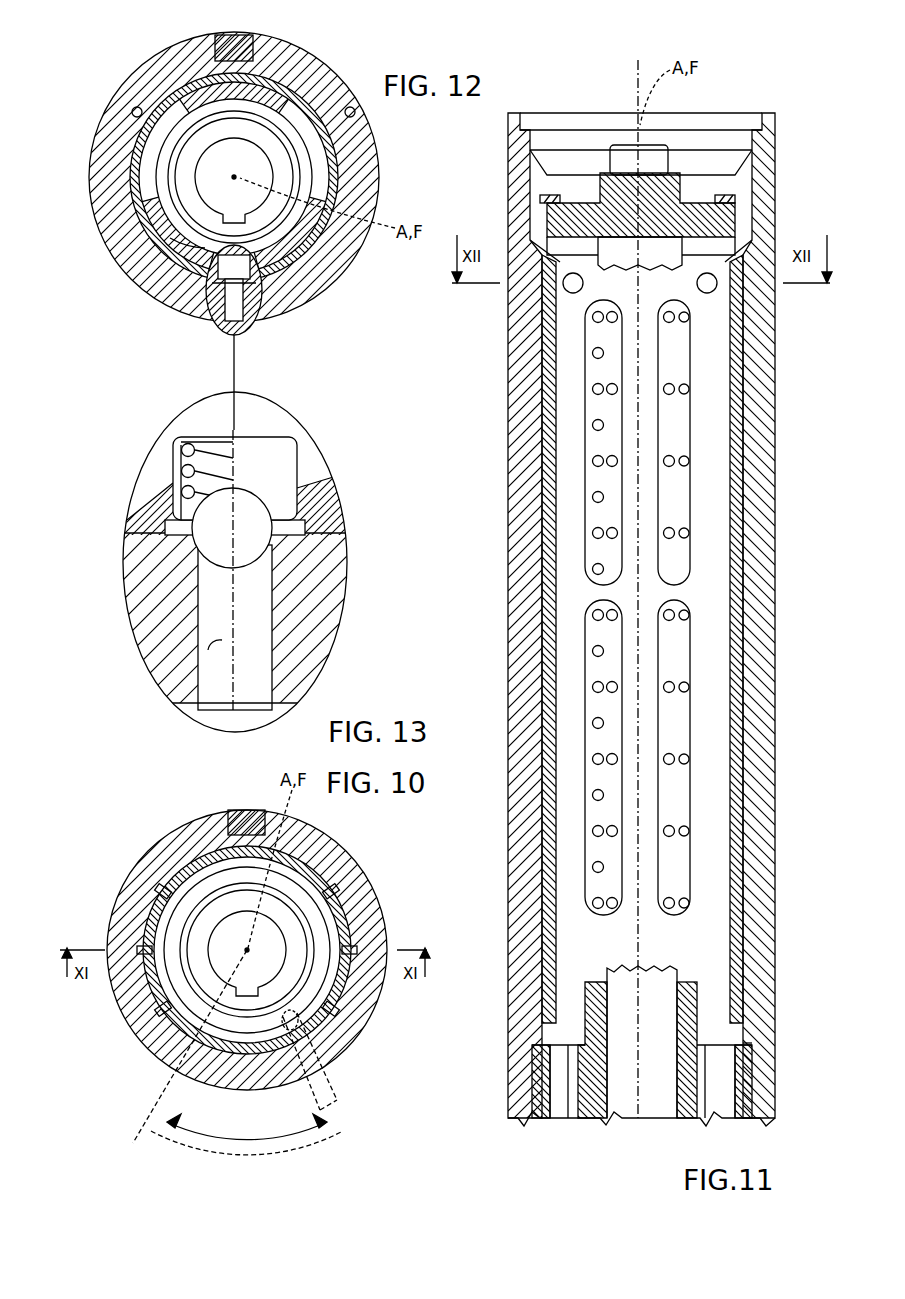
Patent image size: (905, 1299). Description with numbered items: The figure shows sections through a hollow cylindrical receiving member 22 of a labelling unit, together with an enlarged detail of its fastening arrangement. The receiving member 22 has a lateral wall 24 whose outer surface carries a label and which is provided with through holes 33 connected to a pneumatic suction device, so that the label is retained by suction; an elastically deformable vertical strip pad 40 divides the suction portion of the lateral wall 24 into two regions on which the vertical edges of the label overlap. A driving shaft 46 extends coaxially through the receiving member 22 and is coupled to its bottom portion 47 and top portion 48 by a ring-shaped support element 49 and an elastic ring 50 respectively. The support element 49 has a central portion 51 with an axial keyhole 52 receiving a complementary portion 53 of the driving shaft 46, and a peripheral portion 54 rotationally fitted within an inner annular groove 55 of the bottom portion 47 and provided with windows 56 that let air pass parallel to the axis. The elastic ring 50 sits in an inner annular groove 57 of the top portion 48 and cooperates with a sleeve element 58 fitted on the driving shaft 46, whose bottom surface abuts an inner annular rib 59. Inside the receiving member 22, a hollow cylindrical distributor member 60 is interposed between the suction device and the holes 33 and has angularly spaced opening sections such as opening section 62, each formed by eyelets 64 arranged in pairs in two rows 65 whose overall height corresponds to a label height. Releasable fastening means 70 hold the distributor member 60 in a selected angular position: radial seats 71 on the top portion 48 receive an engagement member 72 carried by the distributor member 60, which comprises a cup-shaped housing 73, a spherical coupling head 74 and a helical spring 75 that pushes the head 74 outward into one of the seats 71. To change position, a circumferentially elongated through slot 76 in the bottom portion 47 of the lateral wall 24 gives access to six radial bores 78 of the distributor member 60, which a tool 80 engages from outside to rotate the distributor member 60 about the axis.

In FIG. 12, the receiving member 22 is at (86, 163).
In FIG. 13, the receiving member 22 is at (140, 585).
In FIG. 10, the receiving member 22 is at (363, 980).
In FIG. 11, the receiving member 22 is at (768, 588).
In FIG. 12, the lateral wall 24 is at (130, 110).
In FIG. 13, the lateral wall 24 is at (160, 635).
In FIG. 10, the lateral wall 24 is at (360, 903).
In FIG. 11, the lateral wall 24 is at (750, 790).
In FIG. 11, the through holes 33 is at (588, 885).
In FIG. 12, the strip pad 40 is at (236, 36).
In FIG. 10, the strip pad 40 is at (246, 810).
In FIG. 11, the driving shaft 46 is at (623, 1083).
In FIG. 11, the bottom portion 47 is at (760, 1065).
In FIG. 11, the top portion 48 is at (727, 237).
In FIG. 12, the support element 49 is at (200, 250).
In FIG. 11, the support element 49 is at (743, 1093).
In FIG. 11, the elastic ring 50 is at (553, 187).
In FIG. 12, the central portion 51 is at (293, 230).
In FIG. 10, the central portion 51 is at (197, 963).
In FIG. 11, the central portion 51 is at (595, 1107).
In FIG. 12, the axial keyhole 52 is at (287, 63).
In FIG. 10, the axial keyhole 52 is at (248, 928).
In FIG. 11, the axial keyhole 52 is at (670, 1083).
In FIG. 11, the complementary portion 53 is at (627, 975).
In FIG. 12, the peripheral portion 54 is at (292, 226).
In FIG. 10, the peripheral portion 54 is at (183, 920).
In FIG. 11, the peripheral portion 54 is at (538, 1110).
In FIG. 11, the inner annular groove 55 is at (538, 1070).
In FIG. 12, the through openings or windows 56 is at (215, 100).
In FIG. 10, the through openings or windows 56 is at (220, 880).
In FIG. 11, the through openings or windows 56 is at (720, 1055).
In FIG. 11, the inner annular groove 57 is at (543, 187).
In FIG. 11, the sleeve element 58 is at (657, 200).
In FIG. 11, the inner annular rib 59 is at (680, 290).
In FIG. 12, the distributor member 60 is at (308, 107).
In FIG. 13, the distributor member 60 is at (145, 490).
In FIG. 10, the distributor member 60 is at (150, 910).
In FIG. 11, the distributor member 60 is at (740, 427).
In FIG. 11, the opening section 62 is at (668, 350).
In FIG. 11, the eyelets 64 is at (618, 437).
In FIG. 11, the rows 65 is at (755, 210).
In FIG. 12, the releasable fastening means 70 is at (230, 290).
In FIG. 13, the releasable fastening means 70 is at (113, 625).
In FIG. 12, the radial seats 71 is at (138, 108).
In FIG. 13, the radial seats 71 is at (208, 650).
In FIG. 11, the radial seats 71 is at (565, 292).
In FIG. 13, the engagement member 72 is at (308, 465).
In FIG. 13, the cup-shaped housing 73 is at (188, 443).
In FIG. 13, the spherical coupling head 74 is at (255, 553).
In FIG. 13, the helical spring 75 is at (185, 470).
In FIG. 10, the through slot 76 is at (185, 1060).
In FIG. 10, the radial bores 78 is at (195, 860).
In FIG. 10, the tool 80 is at (333, 1072).